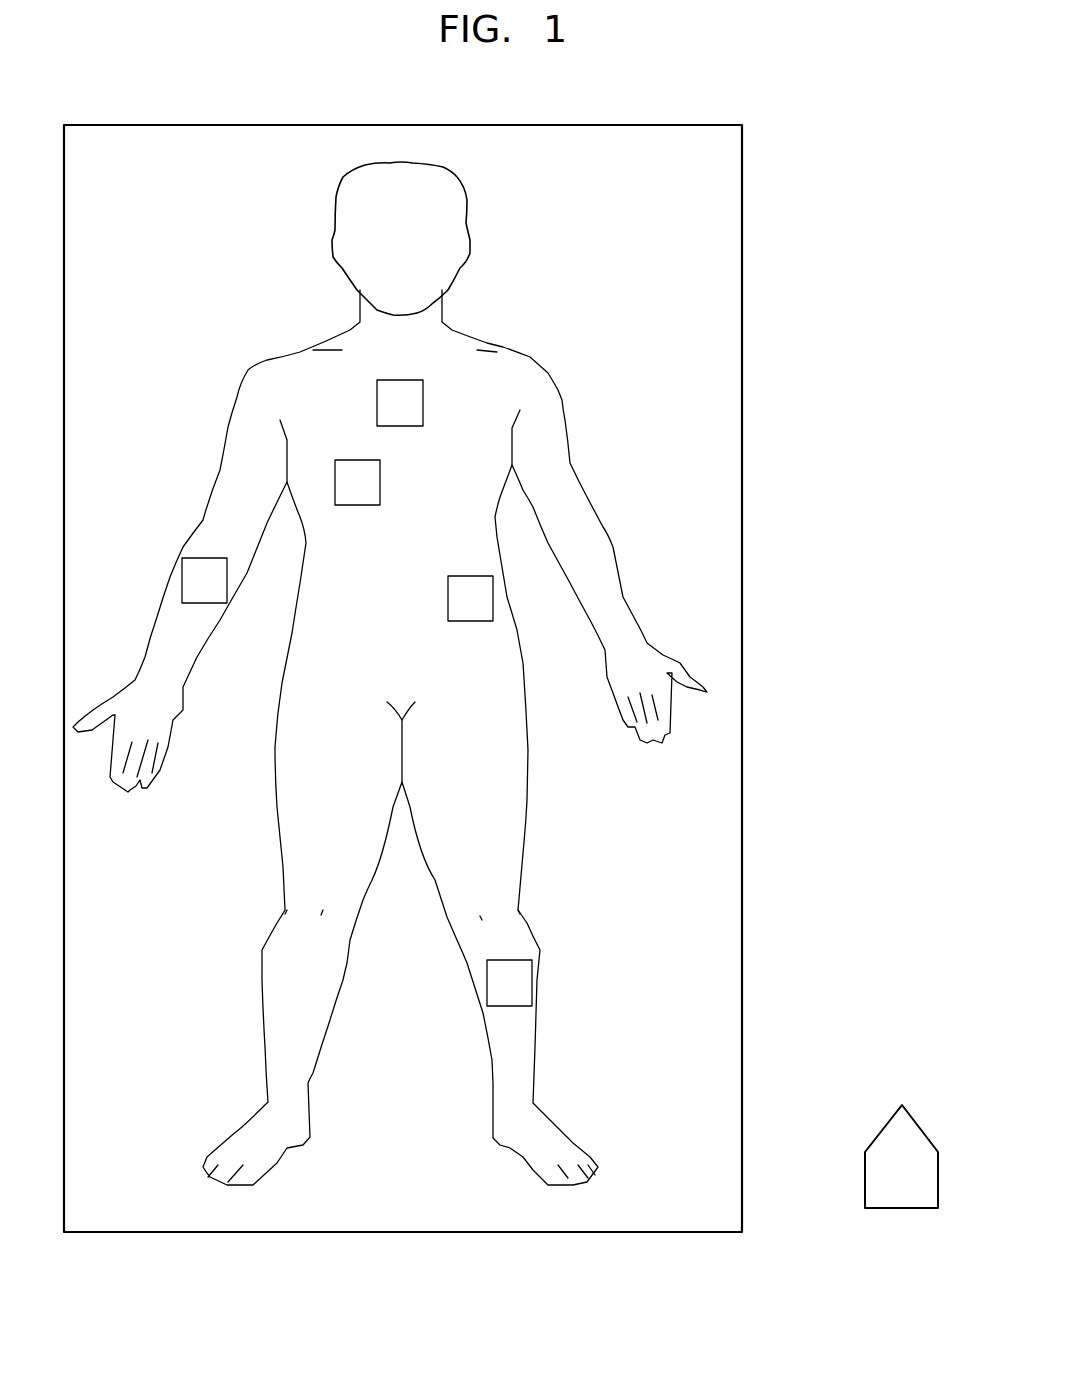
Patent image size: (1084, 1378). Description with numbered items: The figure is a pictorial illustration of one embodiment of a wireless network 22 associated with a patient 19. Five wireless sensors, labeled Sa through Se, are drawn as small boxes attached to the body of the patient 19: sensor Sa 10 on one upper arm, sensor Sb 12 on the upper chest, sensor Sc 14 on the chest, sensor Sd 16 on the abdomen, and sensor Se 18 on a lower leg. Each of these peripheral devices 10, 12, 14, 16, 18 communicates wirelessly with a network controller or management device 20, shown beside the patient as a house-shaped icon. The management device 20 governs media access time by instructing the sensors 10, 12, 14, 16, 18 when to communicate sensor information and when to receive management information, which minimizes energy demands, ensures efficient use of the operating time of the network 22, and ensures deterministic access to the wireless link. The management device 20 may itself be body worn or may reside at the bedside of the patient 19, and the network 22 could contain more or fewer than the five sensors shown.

The wireless sensor Sa 10 is at (183, 580).
The wireless sensor Sb 12 is at (377, 392).
The wireless sensor Sc 14 is at (380, 473).
The wireless sensor Sd 16 is at (463, 575).
The wireless sensor Se 18 is at (532, 970).
The patient 19 is at (524, 842).
The management device 20 is at (865, 1152).
The wireless network 22 is at (482, 1275).